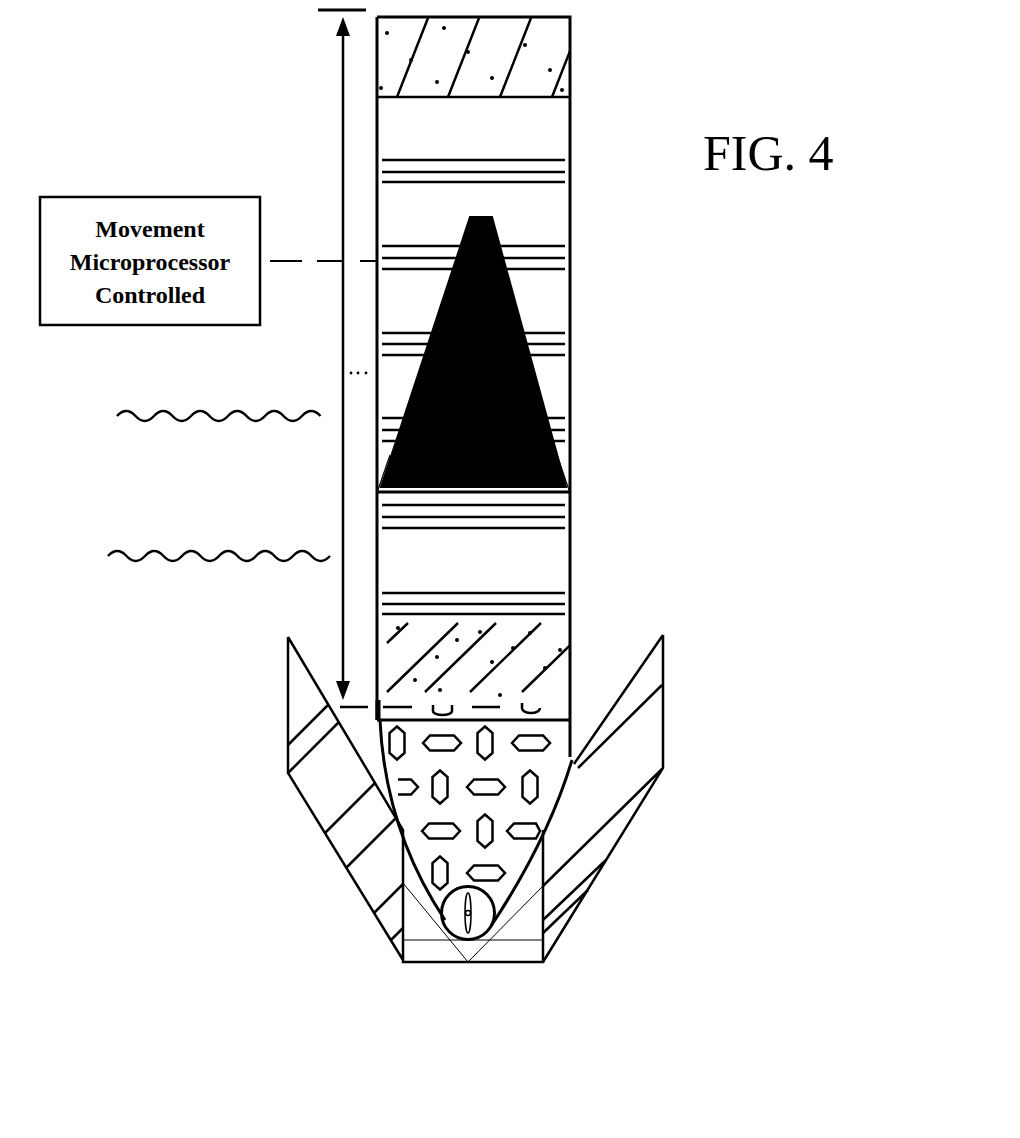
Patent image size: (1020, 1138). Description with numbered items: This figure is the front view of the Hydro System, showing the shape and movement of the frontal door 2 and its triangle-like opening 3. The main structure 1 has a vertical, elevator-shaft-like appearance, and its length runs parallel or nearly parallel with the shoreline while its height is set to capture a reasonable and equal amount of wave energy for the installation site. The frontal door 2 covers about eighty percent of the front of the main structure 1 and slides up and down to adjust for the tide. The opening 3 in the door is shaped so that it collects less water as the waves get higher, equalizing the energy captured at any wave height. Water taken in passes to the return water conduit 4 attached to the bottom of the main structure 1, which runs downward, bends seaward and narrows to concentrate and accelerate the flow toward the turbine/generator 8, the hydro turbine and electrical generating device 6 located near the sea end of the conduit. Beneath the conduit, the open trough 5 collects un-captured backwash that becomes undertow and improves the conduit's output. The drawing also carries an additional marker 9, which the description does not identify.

The main structure 1 is at (578, 655).
The frontal door 2 is at (578, 557).
The opening 3 is at (522, 340).
The return water conduit 4 is at (578, 730).
The open trough 5 is at (612, 860).
The hydro turbine and electrical generating device 6 is at (455, 915).
The turbine/generator 8 is at (203, 554).
The wave line 9 is at (204, 412).